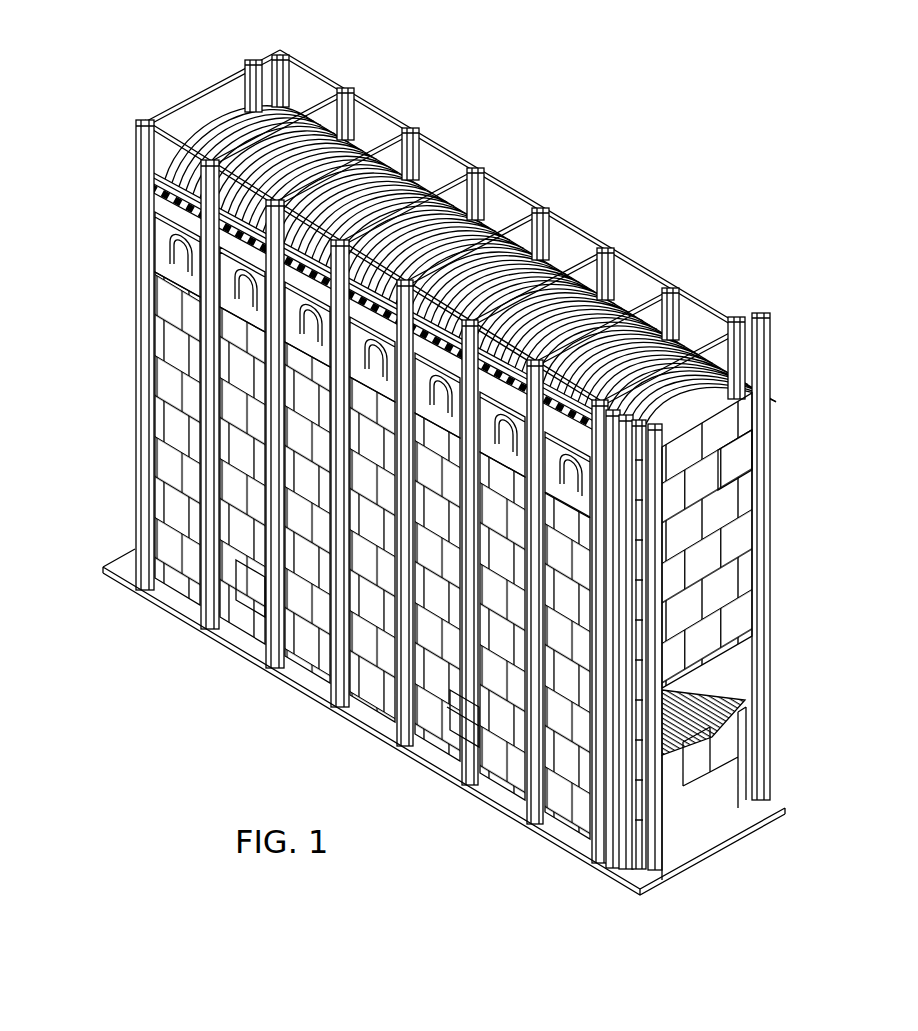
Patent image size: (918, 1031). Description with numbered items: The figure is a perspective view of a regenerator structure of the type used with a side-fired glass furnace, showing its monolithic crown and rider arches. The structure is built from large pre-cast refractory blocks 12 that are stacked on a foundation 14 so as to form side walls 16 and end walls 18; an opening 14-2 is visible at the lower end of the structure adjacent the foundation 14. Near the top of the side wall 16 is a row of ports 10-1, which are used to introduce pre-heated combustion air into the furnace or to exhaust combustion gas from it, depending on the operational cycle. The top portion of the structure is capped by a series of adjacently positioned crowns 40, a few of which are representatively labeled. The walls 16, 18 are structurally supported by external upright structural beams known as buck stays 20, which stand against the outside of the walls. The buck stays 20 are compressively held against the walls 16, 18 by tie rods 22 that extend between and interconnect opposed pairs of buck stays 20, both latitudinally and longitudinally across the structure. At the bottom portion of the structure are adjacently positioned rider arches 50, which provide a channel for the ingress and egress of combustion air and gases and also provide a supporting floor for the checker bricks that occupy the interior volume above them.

The ports 10-1 is at (248, 290).
The pre-cast refractory blocks 12 is at (720, 457).
The foundation 14 is at (720, 820).
The base opening 14-2 is at (720, 787).
The side walls 16 is at (452, 636).
The end walls 18 is at (727, 614).
The buck stays 20 is at (300, 95).
The tie rods 22 is at (188, 92).
The crowns 40 is at (590, 242).
The rider arches 50 is at (747, 735).